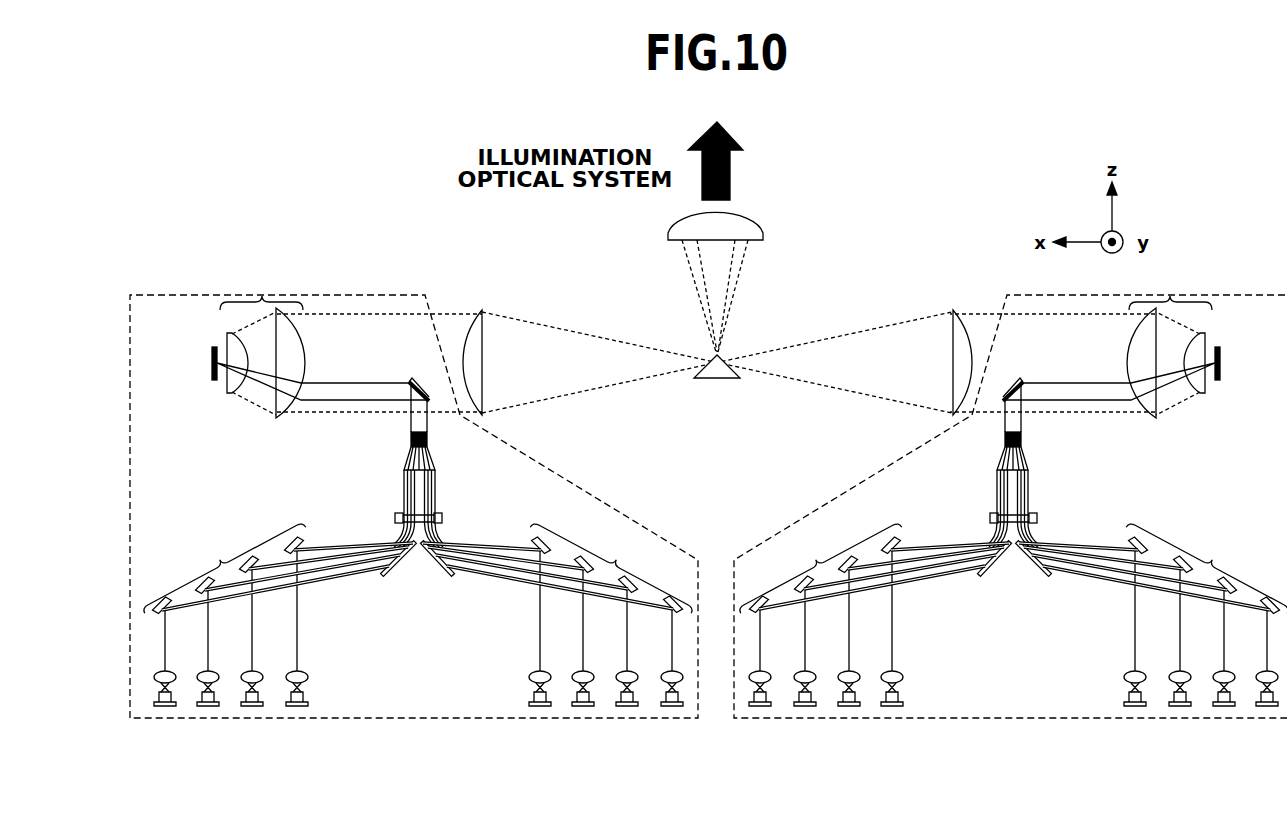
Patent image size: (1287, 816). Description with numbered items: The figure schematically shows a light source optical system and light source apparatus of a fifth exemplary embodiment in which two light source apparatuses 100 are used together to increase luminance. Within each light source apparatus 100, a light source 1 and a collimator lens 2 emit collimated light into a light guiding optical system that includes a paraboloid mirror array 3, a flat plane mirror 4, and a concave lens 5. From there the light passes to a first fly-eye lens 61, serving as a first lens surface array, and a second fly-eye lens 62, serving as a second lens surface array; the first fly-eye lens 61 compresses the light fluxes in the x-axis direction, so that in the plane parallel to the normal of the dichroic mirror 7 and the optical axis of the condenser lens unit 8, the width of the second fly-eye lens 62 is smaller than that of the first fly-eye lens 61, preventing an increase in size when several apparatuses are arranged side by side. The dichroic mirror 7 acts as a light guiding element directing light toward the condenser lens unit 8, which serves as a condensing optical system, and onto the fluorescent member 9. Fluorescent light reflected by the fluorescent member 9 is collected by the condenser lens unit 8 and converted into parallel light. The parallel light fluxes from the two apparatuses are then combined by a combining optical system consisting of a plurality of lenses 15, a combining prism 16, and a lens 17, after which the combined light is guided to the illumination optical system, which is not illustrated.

The light source 1 is at (311, 704).
The collimator lens 2 is at (311, 678).
The paraboloid mirror array 3 is at (418, 568).
The flat plane mirror 4 is at (446, 578).
The concave lens 5 is at (443, 519).
The dichroic mirror 7 is at (419, 381).
The condenser lens unit 8 is at (351, 344).
The fluorescent member 9 is at (211, 365).
The lenses 15 is at (482, 310).
The combining prism 16 is at (717, 382).
The lens 17 is at (765, 236).
The first fly-eye lens 61 is at (404, 471).
The second fly-eye lens 62 is at (410, 439).
The light source apparatus 100 is at (162, 294).